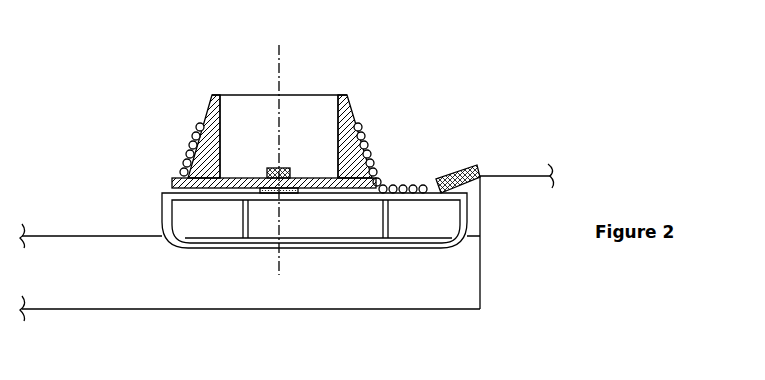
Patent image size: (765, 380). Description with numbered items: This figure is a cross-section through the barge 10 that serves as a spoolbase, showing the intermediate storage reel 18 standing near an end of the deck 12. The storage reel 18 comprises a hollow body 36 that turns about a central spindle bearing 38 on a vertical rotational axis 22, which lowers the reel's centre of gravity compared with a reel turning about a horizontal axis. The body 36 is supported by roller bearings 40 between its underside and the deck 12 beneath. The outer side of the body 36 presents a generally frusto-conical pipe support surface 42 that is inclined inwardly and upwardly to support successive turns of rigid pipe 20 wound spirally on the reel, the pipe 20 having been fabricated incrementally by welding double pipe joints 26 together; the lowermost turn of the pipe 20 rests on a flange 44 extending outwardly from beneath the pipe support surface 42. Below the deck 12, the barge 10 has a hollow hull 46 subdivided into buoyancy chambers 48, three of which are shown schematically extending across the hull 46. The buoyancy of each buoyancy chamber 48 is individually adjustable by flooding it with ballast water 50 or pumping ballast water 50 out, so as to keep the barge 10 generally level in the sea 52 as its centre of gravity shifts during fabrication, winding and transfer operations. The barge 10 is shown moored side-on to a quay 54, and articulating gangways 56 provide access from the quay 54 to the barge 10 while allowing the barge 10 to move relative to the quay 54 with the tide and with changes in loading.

The barge 10 is at (120, 172).
The deck 12 is at (169, 190).
The intermediate storage reel 18 is at (369, 86).
The rigid pipe 20 is at (364, 137).
The vertical rotational axis 22 is at (279, 75).
The double pipe joints 26 is at (421, 186).
The hollow body 36 is at (247, 110).
The central spindle bearing 38 is at (287, 168).
The roller bearings 40 is at (188, 191).
The frusto-conical pipe support surface 42 is at (208, 103).
The flange 44 is at (178, 178).
The hollow hull 46 is at (455, 240).
The buoyancy chambers 48 is at (185, 220).
The ballast water 50 is at (208, 243).
The sea 52 is at (90, 236).
The quay 54 is at (513, 176).
The articulating gangways 56 is at (468, 166).